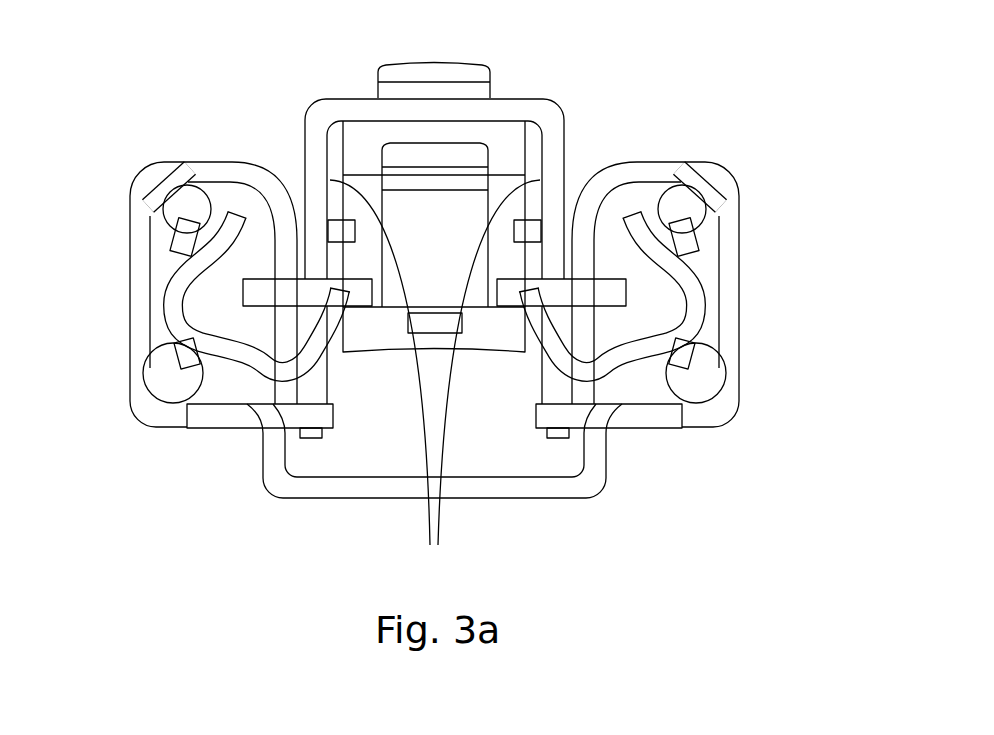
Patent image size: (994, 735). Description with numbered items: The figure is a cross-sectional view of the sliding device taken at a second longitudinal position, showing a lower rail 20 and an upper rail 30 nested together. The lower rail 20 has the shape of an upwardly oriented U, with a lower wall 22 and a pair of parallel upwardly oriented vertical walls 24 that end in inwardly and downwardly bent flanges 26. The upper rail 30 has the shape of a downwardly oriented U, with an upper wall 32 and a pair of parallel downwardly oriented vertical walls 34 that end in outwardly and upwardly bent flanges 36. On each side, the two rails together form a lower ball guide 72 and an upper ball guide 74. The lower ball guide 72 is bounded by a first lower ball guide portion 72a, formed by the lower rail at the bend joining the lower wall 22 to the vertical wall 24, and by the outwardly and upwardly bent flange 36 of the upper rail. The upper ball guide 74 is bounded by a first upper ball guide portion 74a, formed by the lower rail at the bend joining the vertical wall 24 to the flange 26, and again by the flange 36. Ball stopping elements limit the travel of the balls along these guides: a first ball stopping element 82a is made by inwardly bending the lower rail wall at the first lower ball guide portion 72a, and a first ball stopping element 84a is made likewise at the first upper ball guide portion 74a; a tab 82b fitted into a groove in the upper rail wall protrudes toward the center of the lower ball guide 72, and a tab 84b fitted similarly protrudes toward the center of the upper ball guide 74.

The lower rail 20 is at (522, 500).
The lower wall 22 is at (340, 498).
The upwardly oriented vertical wall 24 is at (130, 316).
The inwardly and downwardly bent flange 26 is at (292, 172).
The upper rail 30 is at (346, 96).
The upper wall 32 is at (514, 99).
The downwardly oriented vertical wall 34 is at (435, 378).
The outwardly and upwardly bent flange 36 is at (166, 286).
The lower ball guide 72 is at (215, 390).
The first lower ball guide portion 72a is at (157, 427).
The upper ball guide 74 is at (215, 195).
The first upper ball guide portion 74a is at (140, 173).
The first ball stopping element 82a is at (175, 408).
The tab 82b is at (153, 365).
The first ball stopping element 84a is at (163, 200).
The tab 84b is at (178, 242).